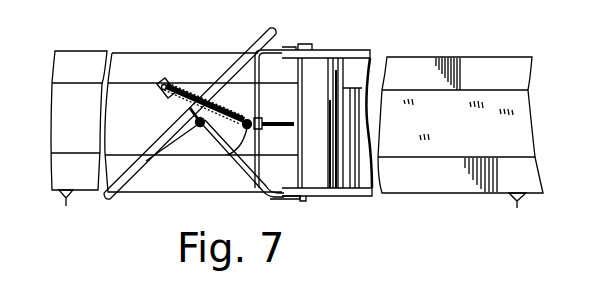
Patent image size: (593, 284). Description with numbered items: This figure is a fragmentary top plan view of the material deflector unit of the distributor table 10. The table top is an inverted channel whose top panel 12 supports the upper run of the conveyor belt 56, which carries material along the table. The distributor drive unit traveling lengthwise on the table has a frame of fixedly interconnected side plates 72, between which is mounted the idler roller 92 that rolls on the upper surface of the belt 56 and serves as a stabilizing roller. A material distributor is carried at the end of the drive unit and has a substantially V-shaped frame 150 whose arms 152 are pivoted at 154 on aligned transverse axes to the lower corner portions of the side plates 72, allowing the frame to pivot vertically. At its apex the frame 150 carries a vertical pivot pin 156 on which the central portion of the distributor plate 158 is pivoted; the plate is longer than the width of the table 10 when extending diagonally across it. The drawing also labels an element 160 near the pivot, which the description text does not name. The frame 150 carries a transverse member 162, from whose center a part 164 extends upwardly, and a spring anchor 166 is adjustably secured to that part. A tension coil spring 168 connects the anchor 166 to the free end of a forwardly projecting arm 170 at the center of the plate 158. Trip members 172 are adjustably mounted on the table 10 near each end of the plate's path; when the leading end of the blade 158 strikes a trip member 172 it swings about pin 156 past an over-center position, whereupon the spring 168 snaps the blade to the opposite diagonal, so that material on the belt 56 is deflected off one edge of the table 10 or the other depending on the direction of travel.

The distributor table 10 is at (507, 49).
The top panel 12 is at (443, 190).
The conveyor belt 56 is at (522, 117).
The side plates 72 is at (358, 53).
The roller 92 is at (313, 172).
The frame 150 is at (233, 160).
The arms 152 is at (284, 46).
The pivot 154 is at (305, 44).
The vertical pivot pin 156 is at (173, 152).
The distributor plate 158 is at (260, 40).
The pivot pin 160 is at (196, 124).
The transverse member 162 is at (259, 95).
The part 164 is at (259, 120).
The spring anchor 166 is at (227, 155).
The tension coil spring 168 is at (185, 86).
The forwardly projecting arm 170 is at (167, 97).
The trip members 172 is at (66, 206).